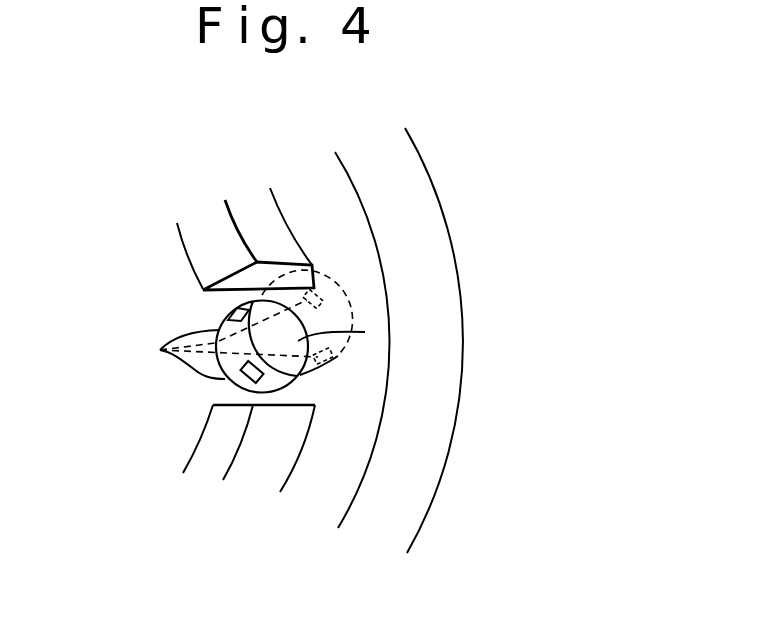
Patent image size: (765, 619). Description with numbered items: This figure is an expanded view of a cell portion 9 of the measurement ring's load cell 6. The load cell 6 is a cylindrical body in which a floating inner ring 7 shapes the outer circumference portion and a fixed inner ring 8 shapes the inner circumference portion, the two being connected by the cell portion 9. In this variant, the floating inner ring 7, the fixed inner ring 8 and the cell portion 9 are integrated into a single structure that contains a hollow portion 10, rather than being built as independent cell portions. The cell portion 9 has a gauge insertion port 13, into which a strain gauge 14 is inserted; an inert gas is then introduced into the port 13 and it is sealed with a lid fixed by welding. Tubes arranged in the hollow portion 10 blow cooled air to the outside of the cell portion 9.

The load cell 6 is at (463, 188).
The floating inner ring 7 is at (440, 267).
The fixed inner ring 8 is at (160, 251).
The cell portion 9 is at (222, 300).
The hollow portion 10 is at (273, 438).
The gauge insertion port 13 is at (293, 343).
The strain gauge 14 is at (246, 324).